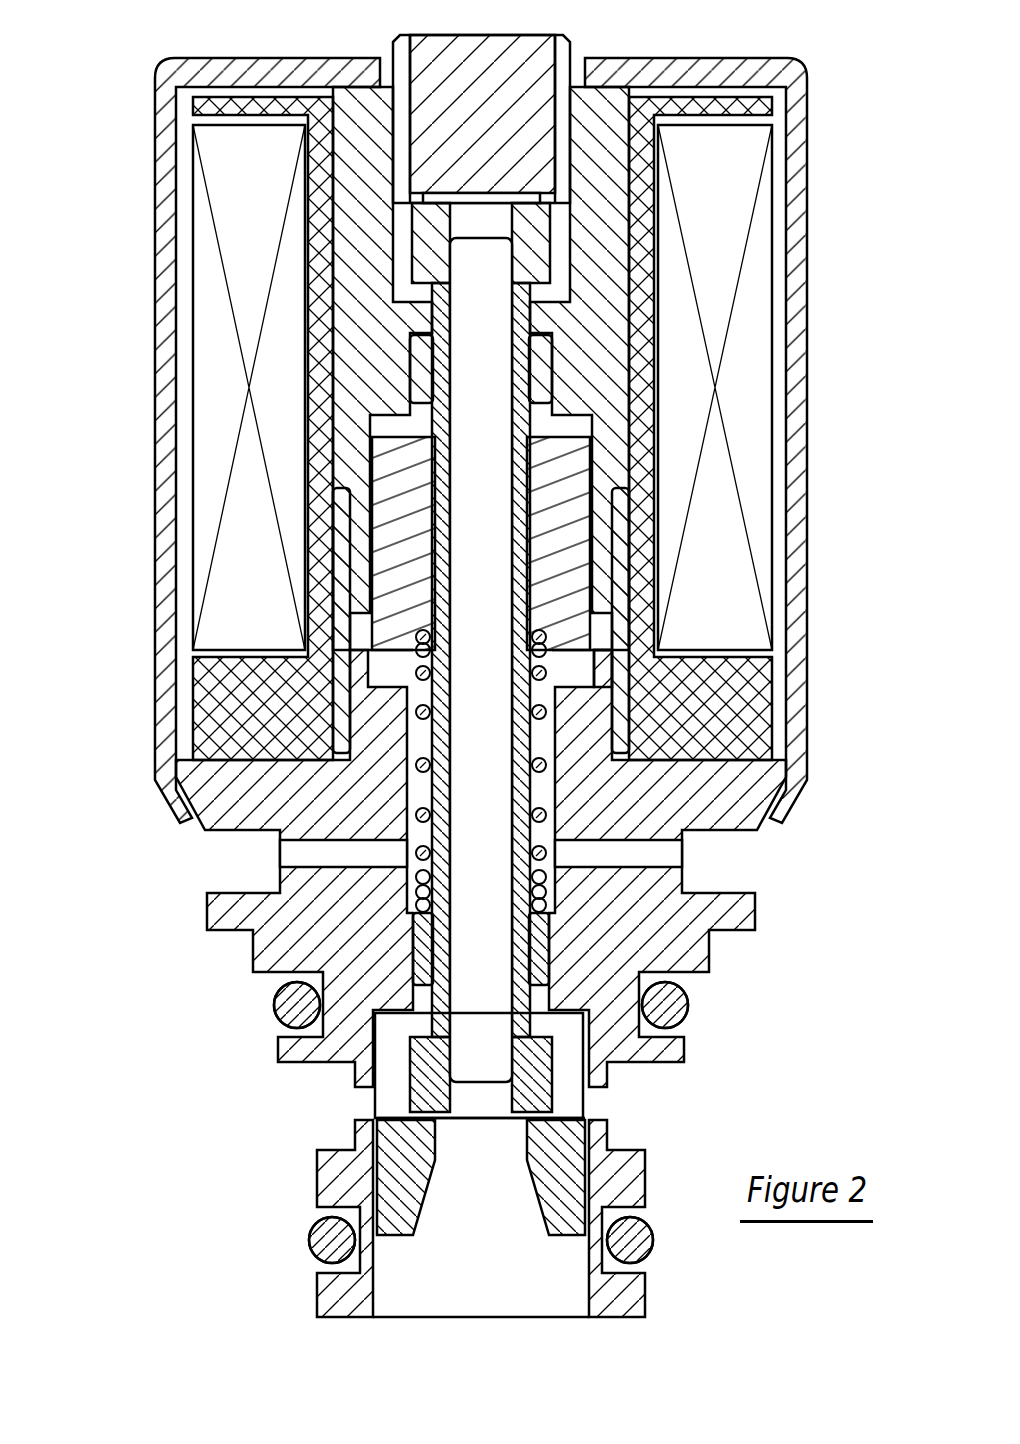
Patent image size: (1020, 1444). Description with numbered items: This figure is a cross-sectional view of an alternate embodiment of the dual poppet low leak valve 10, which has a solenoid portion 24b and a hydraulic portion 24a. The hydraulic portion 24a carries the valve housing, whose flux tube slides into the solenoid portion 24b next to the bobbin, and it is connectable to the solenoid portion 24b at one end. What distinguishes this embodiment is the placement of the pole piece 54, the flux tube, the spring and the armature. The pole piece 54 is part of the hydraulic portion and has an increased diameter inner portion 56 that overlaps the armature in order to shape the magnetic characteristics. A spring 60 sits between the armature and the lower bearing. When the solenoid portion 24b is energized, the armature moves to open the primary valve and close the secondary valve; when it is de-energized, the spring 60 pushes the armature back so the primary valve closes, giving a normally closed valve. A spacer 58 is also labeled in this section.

The dual poppet low leak valve 10 is at (114, 153).
The solenoid portion 24b is at (83, 37).
The hydraulic portion 24a is at (81, 867).
The pole piece 54 is at (575, 732).
The increased diameter inner portion 56 is at (605, 670).
The spacer 58 is at (563, 642).
The spring 60 is at (538, 815).